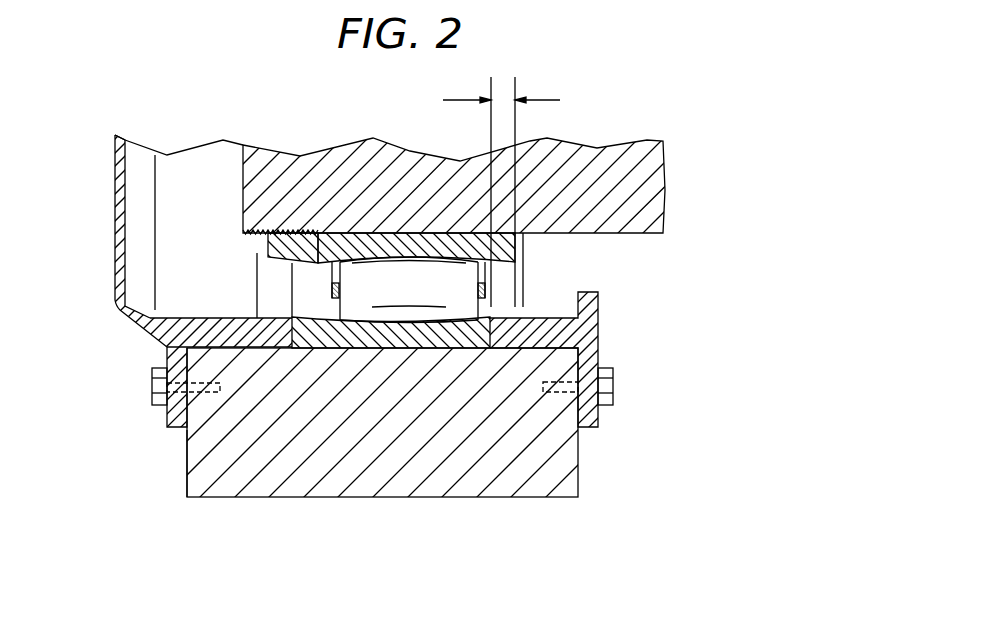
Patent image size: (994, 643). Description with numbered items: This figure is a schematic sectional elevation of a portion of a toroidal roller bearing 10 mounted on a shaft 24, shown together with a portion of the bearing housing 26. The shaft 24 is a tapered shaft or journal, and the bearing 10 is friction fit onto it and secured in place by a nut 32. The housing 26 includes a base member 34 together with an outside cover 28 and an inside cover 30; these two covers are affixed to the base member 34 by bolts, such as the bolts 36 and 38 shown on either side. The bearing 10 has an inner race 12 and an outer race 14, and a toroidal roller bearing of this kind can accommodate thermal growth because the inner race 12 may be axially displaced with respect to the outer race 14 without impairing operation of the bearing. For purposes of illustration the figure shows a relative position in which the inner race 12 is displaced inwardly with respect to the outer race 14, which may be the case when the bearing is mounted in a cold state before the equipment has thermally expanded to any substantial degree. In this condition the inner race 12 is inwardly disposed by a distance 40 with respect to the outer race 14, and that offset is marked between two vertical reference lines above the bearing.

The toroidal roller bearing 10 is at (548, 281).
The inner race 12 is at (378, 245).
The outer race 14 is at (342, 333).
The shaft 24 is at (436, 170).
The housing 26 is at (170, 453).
The outside cover 28 is at (115, 199).
The inside cover 30 is at (578, 322).
The nut 32 is at (297, 243).
The base member 34 is at (503, 448).
The bolt 36 is at (613, 385).
The bolt 38 is at (152, 385).
The distance 40 is at (543, 100).